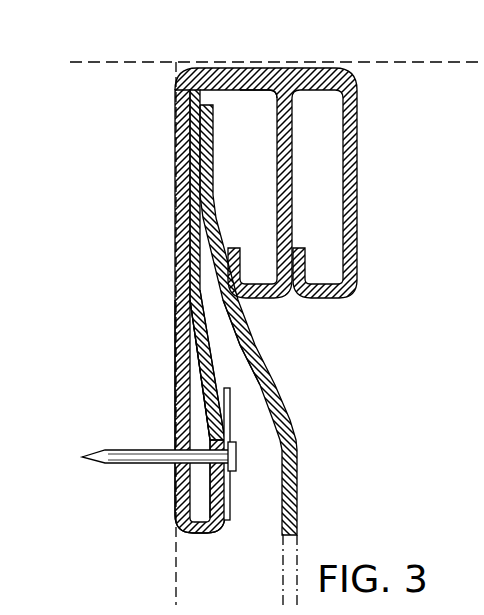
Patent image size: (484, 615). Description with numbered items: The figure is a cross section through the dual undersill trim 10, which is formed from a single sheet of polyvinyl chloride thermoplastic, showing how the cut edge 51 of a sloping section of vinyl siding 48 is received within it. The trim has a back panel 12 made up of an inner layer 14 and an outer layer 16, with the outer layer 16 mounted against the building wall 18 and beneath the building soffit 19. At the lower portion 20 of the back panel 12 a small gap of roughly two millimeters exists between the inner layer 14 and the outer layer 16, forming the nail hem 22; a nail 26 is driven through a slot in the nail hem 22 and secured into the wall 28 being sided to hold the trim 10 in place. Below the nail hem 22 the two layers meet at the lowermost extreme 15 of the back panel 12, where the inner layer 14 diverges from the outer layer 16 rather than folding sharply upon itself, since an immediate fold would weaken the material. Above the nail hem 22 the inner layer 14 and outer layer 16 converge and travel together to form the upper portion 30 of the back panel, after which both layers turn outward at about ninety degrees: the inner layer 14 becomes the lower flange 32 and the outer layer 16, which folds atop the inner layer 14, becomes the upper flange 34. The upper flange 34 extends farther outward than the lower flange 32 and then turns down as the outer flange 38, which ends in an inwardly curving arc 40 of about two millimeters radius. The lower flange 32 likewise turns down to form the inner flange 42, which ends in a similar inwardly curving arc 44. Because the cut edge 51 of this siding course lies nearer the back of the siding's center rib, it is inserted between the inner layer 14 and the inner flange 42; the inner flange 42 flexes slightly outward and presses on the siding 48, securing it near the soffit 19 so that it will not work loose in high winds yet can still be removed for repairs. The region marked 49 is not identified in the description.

The dual undersill trim 10 is at (370, 156).
The back panel 12 is at (175, 178).
The inner layer 14 is at (222, 372).
The lowermost extreme 15 is at (203, 533).
The outer layer 16 is at (177, 375).
The building wall 18 is at (173, 88).
The building soffit 19 is at (138, 62).
The lower portion 20 is at (178, 497).
The nail hem 22 is at (178, 405).
The nail 26 is at (232, 467).
The wall 28 is at (178, 520).
The upper portion 30 is at (173, 155).
The lower flange 32 is at (173, 132).
The upper flange 34 is at (277, 68).
The outer flange 38 is at (355, 133).
The inwardly curving arc 40 is at (325, 288).
The inner flange 42 is at (293, 182).
The inwardly curving arc 44 is at (265, 283).
The siding 48 is at (297, 480).
The bend portion 49 is at (252, 343).
The cut edge 51 is at (243, 95).